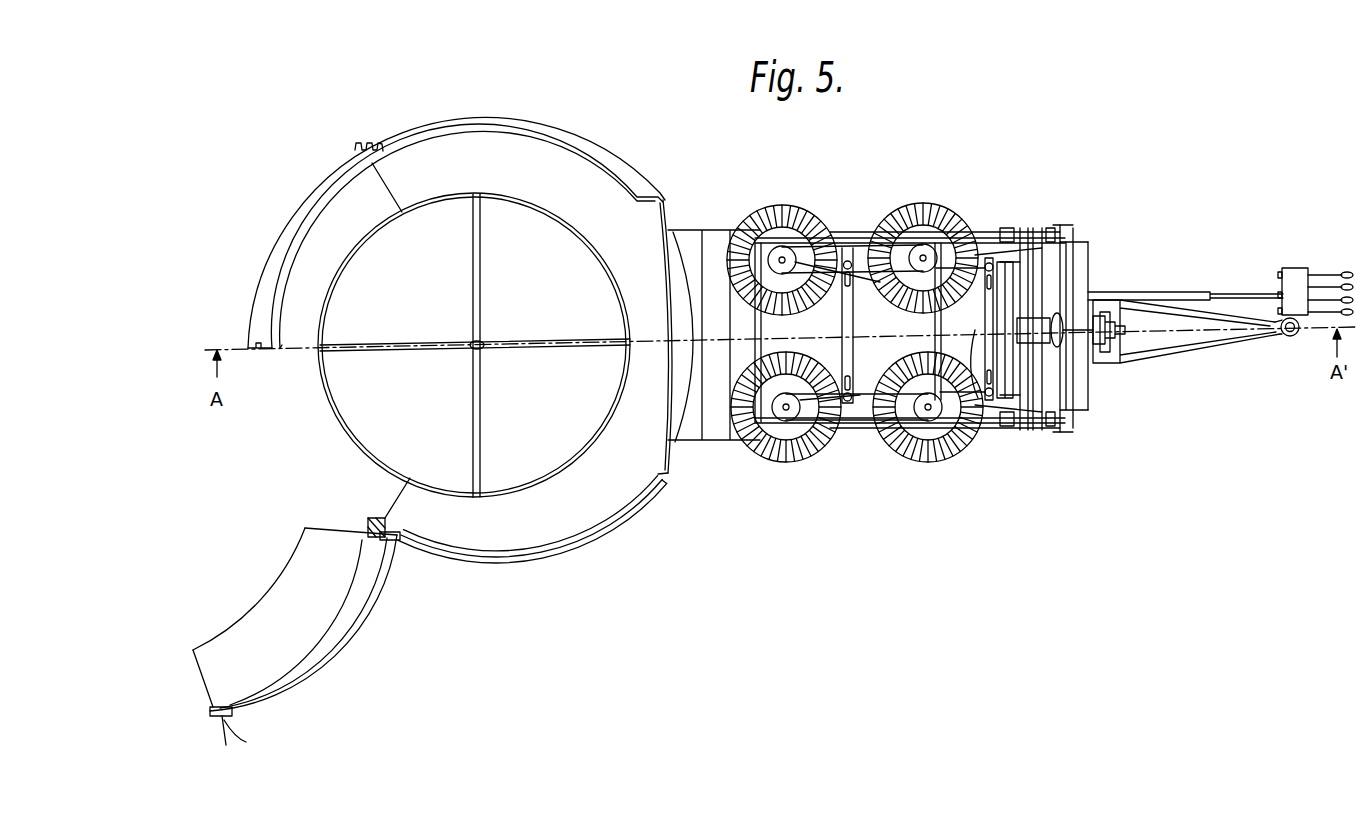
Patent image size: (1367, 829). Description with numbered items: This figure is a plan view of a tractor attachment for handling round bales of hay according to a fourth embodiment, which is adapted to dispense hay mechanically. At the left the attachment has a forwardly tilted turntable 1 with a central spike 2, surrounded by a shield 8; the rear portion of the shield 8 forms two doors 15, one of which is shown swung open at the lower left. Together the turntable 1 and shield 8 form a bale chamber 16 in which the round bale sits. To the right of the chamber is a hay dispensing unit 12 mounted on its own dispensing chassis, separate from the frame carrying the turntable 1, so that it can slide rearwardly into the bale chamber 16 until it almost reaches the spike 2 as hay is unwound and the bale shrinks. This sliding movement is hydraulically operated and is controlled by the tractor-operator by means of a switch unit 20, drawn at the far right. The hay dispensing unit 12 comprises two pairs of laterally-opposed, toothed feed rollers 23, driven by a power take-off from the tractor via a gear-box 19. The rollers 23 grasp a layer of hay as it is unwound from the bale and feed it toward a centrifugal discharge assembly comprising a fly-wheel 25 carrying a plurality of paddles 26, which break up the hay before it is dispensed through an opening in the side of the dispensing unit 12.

The turntable 1 is at (552, 462).
The spike 2 is at (482, 350).
The shield 8 is at (545, 553).
The hay dispensing unit 12 is at (968, 210).
The doors 15 is at (352, 637).
The bale chamber 16 is at (533, 115).
The gear-box 19 is at (1040, 320).
The switch unit 20 is at (1292, 268).
The toothed feed rollers 23 is at (890, 443).
The fly-wheel 25 is at (997, 400).
The paddles 26 is at (978, 372).